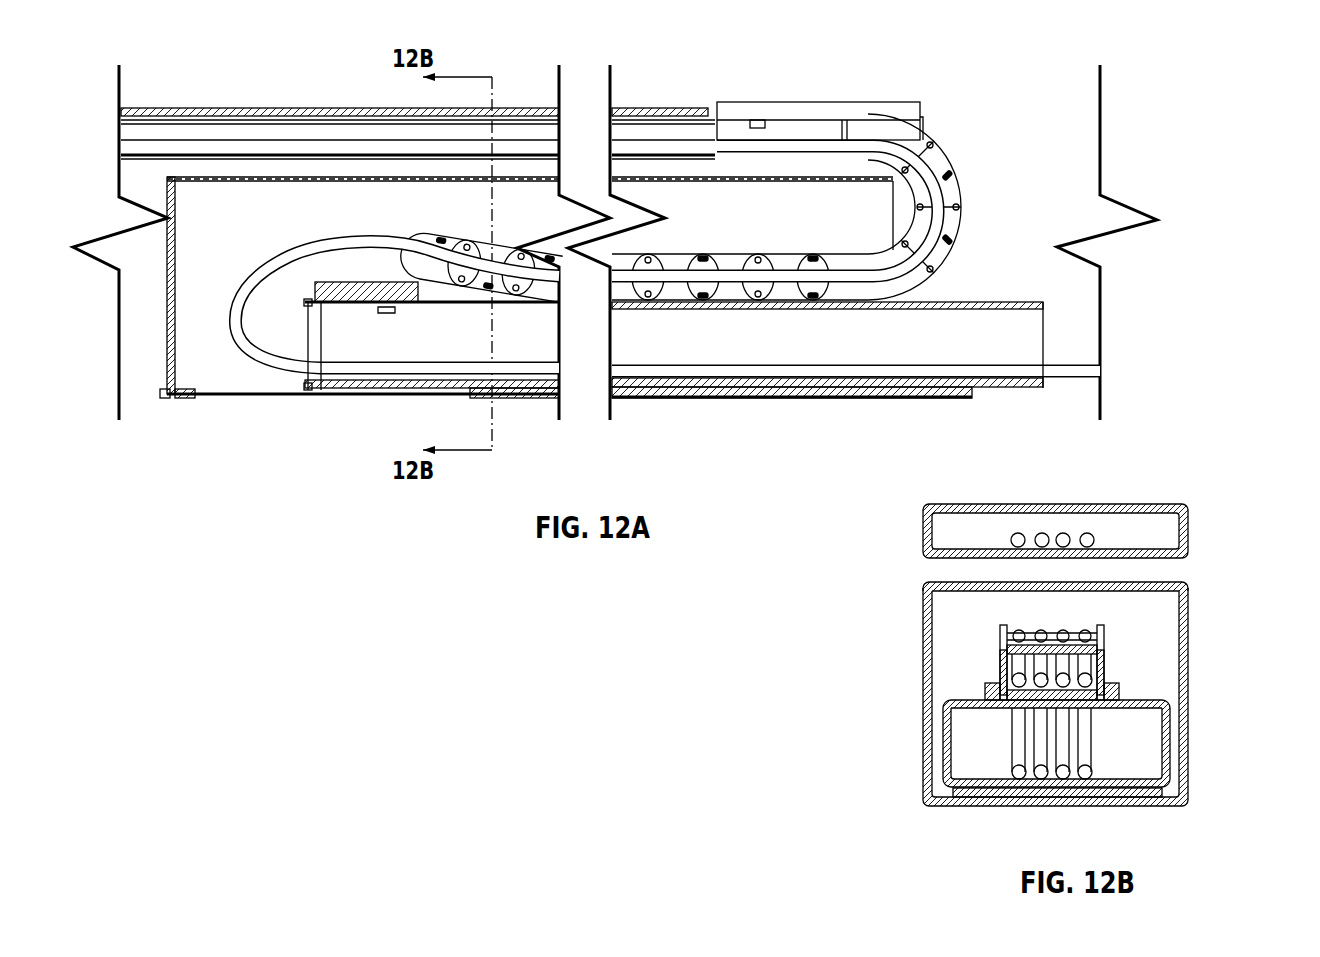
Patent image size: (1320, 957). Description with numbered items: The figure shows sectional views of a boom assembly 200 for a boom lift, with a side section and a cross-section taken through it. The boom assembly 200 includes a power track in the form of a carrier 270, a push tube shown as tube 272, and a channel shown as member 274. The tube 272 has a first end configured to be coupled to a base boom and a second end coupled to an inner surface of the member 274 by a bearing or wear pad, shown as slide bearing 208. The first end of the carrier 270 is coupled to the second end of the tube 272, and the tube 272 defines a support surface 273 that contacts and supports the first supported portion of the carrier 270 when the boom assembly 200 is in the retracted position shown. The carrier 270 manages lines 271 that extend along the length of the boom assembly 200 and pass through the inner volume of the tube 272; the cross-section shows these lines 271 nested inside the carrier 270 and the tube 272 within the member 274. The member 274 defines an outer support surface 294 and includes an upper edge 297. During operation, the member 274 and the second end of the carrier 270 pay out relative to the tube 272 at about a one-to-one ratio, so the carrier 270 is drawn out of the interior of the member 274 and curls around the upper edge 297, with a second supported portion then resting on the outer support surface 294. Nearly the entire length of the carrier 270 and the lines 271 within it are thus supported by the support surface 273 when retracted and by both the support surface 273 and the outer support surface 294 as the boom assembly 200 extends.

In FIG. 12A, the boom assembly 200 is at (962, 58).
In FIG. 12B, the boom assembly 200 is at (843, 648).
In FIG. 12A, the slide bearing 208 is at (522, 399).
In FIG. 12B, the slide bearing 208 is at (967, 797).
In FIG. 12A, the carrier 270 is at (932, 157).
In FIG. 12B, the carrier 270 is at (1000, 668).
In FIG. 12A, the lines 271 is at (290, 258).
In FIG. 12B, the lines 271 is at (1092, 737).
In FIG. 12A, the tube 272 is at (347, 383).
In FIG. 12B, the tube 272 is at (943, 738).
In FIG. 12A, the support surface 273 is at (997, 302).
In FIG. 12B, the support surface 273 is at (1140, 700).
In FIG. 12A, the member 274 is at (232, 397).
In FIG. 12B, the member 274 is at (1190, 626).
In FIG. 12A, the outer support surface 294 is at (795, 178).
In FIG. 12B, the outer support surface 294 is at (1166, 577).
In FIG. 12A, the upper edge 297 is at (888, 186).